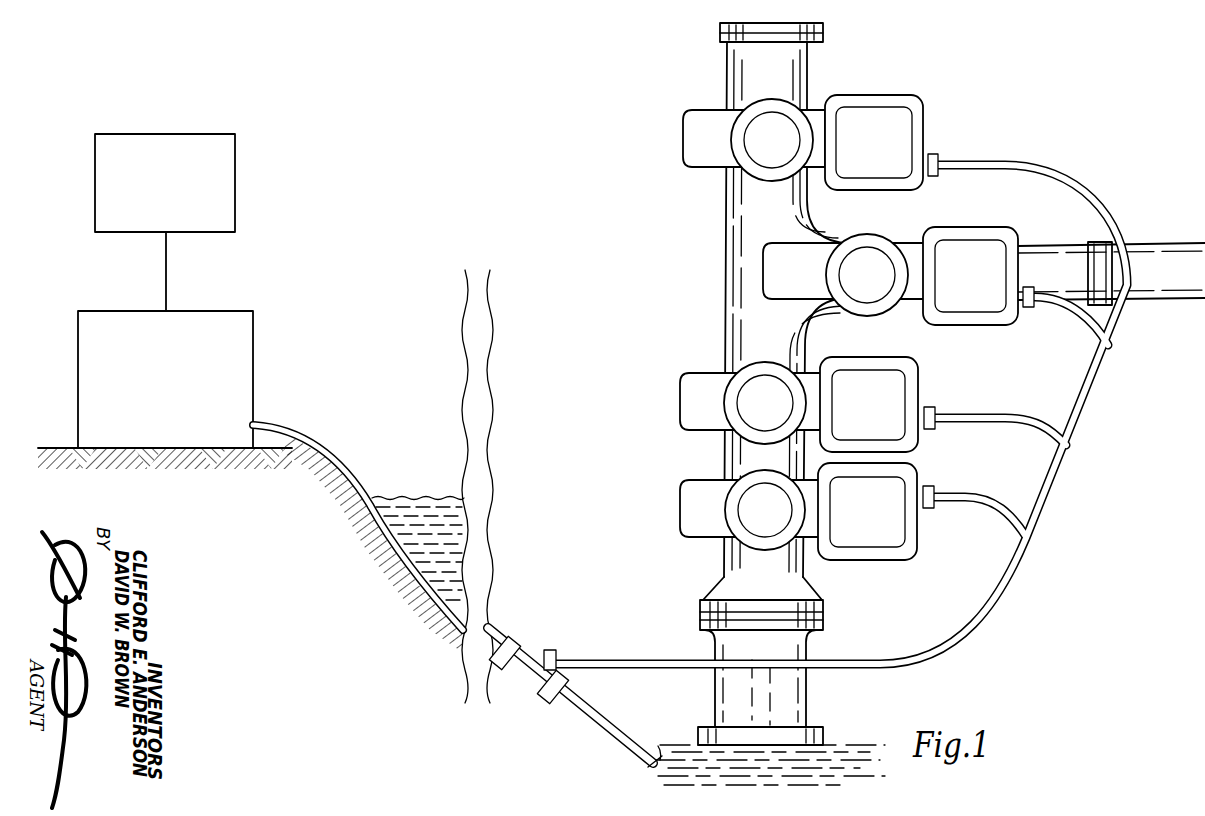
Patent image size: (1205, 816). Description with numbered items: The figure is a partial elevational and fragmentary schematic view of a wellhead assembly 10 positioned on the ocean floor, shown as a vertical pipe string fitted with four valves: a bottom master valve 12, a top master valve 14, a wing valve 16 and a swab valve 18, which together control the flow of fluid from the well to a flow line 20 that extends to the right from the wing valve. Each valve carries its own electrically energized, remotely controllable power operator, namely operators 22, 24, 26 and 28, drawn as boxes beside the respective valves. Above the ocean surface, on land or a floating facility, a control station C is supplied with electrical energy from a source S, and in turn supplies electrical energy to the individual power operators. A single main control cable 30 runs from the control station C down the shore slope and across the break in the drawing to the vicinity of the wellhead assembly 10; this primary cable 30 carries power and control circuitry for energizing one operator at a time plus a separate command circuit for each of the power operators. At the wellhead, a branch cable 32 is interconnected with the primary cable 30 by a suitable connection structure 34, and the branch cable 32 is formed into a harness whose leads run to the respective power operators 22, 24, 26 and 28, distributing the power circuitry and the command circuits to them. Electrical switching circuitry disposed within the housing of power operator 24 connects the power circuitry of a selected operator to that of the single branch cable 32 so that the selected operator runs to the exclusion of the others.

The wellhead assembly 10 is at (722, 223).
The bottom master valve 12 is at (757, 512).
The top master valve 14 is at (756, 410).
The wing valve 16 is at (867, 287).
The swab valve 18 is at (762, 136).
The flow line 20 is at (1197, 250).
The power operator 22 is at (870, 520).
The power operator 24 is at (870, 412).
The power operator 26 is at (972, 292).
The power operator 28 is at (871, 157).
The main control cable 30 is at (354, 476).
The branch cable 32 is at (697, 663).
The connection structure 34 is at (524, 672).
The source of electrical energy S is at (228, 154).
The control station C is at (240, 343).